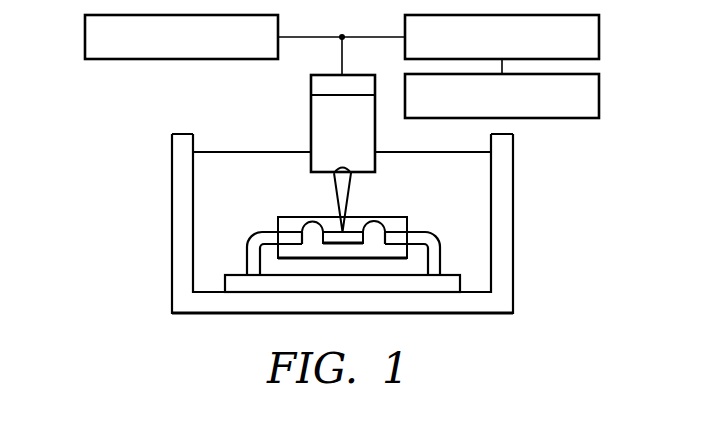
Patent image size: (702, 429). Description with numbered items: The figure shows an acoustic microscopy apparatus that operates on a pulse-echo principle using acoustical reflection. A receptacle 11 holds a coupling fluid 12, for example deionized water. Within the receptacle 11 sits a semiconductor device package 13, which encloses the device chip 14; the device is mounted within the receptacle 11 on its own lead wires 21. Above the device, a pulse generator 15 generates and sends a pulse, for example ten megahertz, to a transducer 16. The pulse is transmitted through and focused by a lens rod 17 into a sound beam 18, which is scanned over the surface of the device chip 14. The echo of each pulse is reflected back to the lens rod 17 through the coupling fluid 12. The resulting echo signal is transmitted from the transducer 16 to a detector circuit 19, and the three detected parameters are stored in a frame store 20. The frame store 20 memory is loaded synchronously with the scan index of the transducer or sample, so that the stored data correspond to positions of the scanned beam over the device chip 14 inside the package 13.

The receptacle 11 is at (172, 260).
The coupling fluid 12 is at (454, 195).
The semiconductor device package 13 is at (295, 217).
The device chip 14 is at (338, 235).
The pulse generator 15 is at (85, 37).
The transducer 16 is at (311, 87).
The lens rod 17 is at (357, 145).
The sound beam 18 is at (347, 187).
The detector circuit 19 is at (599, 35).
The frame store 20 is at (599, 97).
The lead wires 21 is at (249, 253).